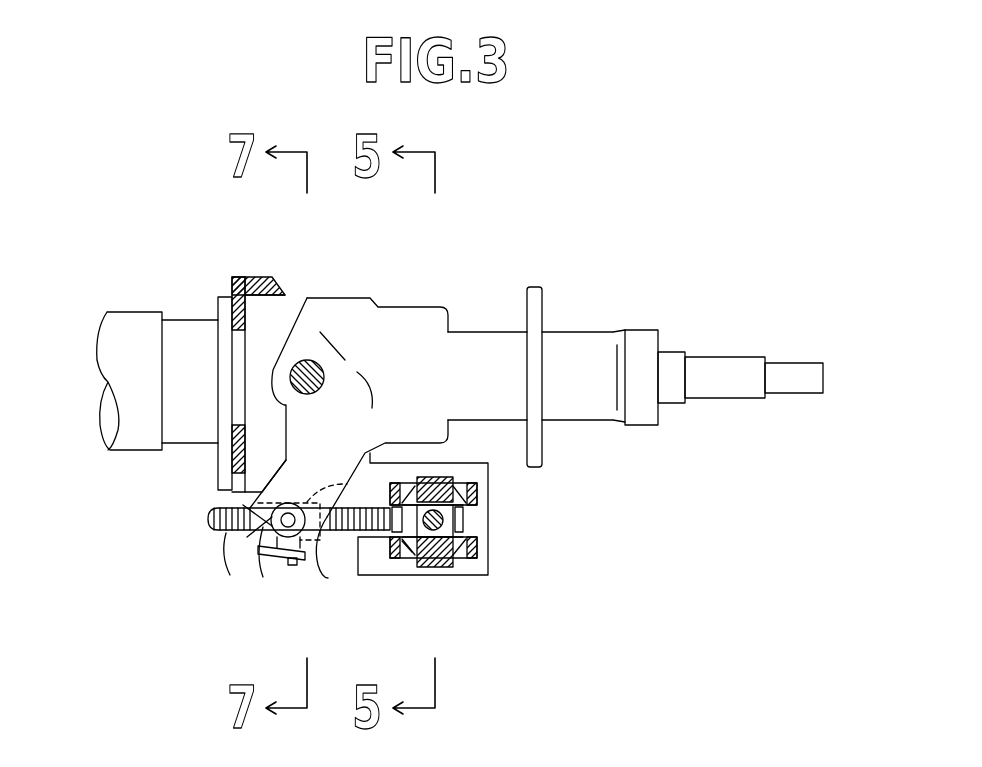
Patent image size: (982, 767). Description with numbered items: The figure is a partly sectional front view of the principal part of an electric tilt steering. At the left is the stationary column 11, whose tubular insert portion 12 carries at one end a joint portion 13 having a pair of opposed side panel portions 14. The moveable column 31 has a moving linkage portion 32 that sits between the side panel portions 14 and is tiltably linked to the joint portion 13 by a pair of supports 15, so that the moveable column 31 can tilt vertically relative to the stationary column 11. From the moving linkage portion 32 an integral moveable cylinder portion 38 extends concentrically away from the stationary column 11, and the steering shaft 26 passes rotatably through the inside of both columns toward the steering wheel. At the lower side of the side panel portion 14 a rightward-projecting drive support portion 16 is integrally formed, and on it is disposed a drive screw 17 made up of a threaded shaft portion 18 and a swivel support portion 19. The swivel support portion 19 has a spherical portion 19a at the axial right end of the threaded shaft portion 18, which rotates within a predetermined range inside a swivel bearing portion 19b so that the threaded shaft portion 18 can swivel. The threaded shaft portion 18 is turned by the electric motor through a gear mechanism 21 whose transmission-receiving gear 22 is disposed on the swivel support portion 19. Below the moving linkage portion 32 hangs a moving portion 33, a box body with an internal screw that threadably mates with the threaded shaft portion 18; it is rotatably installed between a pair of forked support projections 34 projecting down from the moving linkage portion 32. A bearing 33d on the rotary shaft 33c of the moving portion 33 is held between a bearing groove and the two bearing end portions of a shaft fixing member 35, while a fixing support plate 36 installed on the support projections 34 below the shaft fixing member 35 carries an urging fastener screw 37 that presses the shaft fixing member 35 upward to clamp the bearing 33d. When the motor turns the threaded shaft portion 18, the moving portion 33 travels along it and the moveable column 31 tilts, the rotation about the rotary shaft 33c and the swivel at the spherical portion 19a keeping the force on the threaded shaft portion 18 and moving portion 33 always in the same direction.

The stationary column 11 is at (288, 266).
The tubular insert portion 12 is at (146, 310).
The joint portion 13 is at (285, 310).
The side panel portion 14 is at (310, 315).
The support 15 is at (290, 375).
The drive support portion 16 is at (470, 580).
The drive screw 17 is at (478, 524).
The threaded shaft portion 18 is at (226, 545).
The swivel support portion 19 is at (414, 572).
The spherical portion 19a is at (463, 493).
The swivel bearing portion 19b is at (402, 552).
The gear mechanism 21 is at (445, 580).
The transmission-receiving gear 22 is at (437, 480).
The steering shaft 26 is at (705, 352).
The moveable column 31 is at (492, 310).
The moving linkage portion 32 is at (356, 330).
The moving portion 33 is at (345, 491).
The rotary shaft 33c is at (253, 532).
The bearing 33d is at (250, 510).
The support projection 34 is at (328, 560).
The shaft fixing member 35 is at (270, 550).
The fixing support plate 36 is at (300, 575).
The urging fastener screw 37 is at (292, 567).
The moveable cylinder portion 38 is at (572, 331).